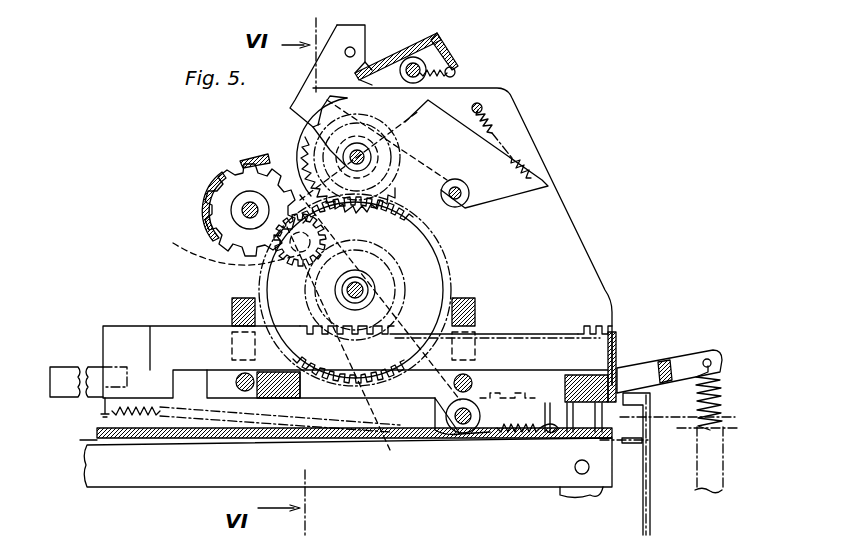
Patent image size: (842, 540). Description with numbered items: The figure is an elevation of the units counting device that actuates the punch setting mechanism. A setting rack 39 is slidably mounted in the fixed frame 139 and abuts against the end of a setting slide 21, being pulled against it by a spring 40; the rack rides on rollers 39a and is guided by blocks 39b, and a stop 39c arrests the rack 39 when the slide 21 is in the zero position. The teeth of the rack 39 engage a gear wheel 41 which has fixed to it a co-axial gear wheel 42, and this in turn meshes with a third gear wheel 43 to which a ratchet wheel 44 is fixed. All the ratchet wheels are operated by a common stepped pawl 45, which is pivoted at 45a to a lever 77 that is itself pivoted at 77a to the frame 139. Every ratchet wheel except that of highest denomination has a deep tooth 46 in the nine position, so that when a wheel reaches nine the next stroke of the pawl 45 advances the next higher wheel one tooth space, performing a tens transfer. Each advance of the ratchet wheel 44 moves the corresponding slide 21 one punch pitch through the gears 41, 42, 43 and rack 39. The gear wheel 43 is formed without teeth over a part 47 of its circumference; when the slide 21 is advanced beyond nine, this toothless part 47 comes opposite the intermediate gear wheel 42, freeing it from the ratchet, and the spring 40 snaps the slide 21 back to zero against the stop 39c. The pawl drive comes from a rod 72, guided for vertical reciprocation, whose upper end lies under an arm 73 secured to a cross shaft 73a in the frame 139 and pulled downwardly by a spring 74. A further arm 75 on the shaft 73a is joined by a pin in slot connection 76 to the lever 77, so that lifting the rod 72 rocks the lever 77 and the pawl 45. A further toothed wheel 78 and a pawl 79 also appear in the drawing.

The setting slide 21 is at (92, 366).
The setting rack 39 is at (165, 335).
The rollers 39a is at (470, 375).
The guide blocks 39b is at (232, 302).
The stop 39c is at (622, 318).
The spring 40 is at (140, 418).
The gear wheel 41 is at (400, 268).
The co-axial gear wheel 42 is at (432, 234).
The third gear wheel 43 is at (417, 131).
The ratchet wheel 44 is at (300, 145).
The stepped pawl 45 is at (377, 64).
The pawl pivot 45a is at (432, 66).
The deep tooth 46 is at (310, 117).
The toothless part 47 is at (376, 212).
The rod 72 is at (648, 473).
The arm 73 is at (662, 362).
The cross shaft 73a is at (463, 425).
The spring 74 is at (697, 411).
The further arm 75 is at (393, 437).
The pin in slot connection 76 is at (227, 246).
The lever 77 is at (433, 64).
The lever pivot 77a is at (412, 112).
The ratchet wheel 78 is at (214, 193).
The pawl 79 is at (222, 171).
The fixed frame 139 is at (548, 226).